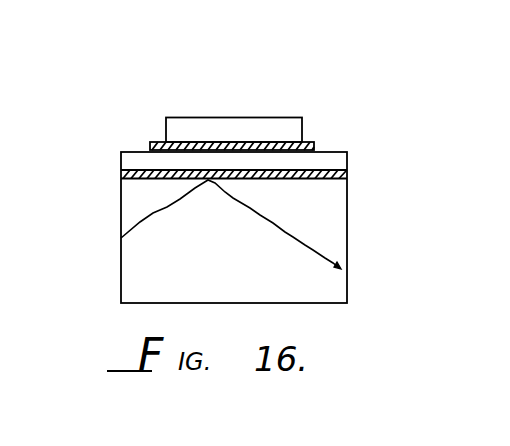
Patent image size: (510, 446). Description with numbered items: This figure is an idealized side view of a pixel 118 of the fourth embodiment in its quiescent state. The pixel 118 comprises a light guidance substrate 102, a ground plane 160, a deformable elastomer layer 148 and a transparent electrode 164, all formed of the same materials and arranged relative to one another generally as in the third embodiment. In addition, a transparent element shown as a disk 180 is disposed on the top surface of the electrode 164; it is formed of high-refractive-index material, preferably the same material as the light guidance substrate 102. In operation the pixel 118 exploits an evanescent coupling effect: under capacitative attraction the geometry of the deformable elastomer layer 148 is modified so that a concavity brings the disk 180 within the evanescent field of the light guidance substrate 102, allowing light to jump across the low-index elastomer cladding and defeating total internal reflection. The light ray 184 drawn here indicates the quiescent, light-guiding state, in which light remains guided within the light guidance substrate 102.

The light guidance substrate 102 is at (244, 180).
The pixel 118 is at (246, 100).
The disk 180 is at (278, 117).
The transparent electrode 164 is at (156, 149).
The deformable elastomer layer 148 is at (125, 160).
The ground plane 160 is at (132, 180).
The light ray 184 is at (332, 237).